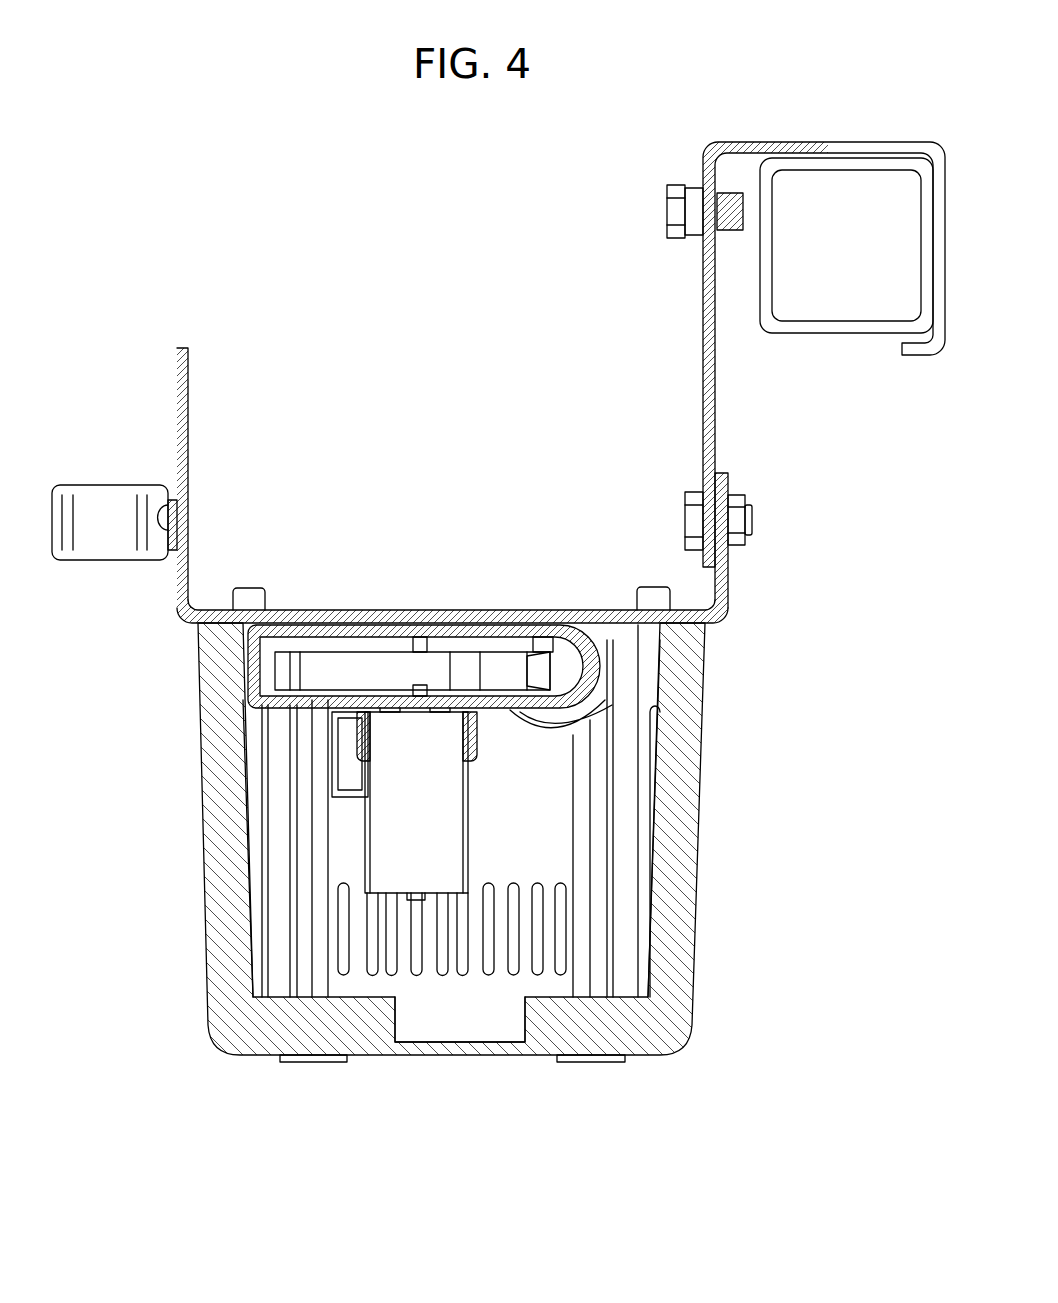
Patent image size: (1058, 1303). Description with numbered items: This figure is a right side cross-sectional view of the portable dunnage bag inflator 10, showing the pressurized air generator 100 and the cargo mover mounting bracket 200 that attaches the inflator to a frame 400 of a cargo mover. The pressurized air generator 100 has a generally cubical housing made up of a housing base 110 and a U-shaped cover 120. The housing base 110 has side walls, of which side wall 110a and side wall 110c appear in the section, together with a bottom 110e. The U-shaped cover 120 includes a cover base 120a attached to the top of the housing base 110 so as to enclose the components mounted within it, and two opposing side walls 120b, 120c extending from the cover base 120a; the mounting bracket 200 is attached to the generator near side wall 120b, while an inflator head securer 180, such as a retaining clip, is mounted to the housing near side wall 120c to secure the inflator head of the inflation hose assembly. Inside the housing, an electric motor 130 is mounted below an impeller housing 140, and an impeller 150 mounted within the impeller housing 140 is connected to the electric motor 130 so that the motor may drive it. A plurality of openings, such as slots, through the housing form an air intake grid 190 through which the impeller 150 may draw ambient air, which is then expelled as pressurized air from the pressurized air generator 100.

The portable dunnage bag inflator 10 is at (259, 232).
The pressurized air generator 100 is at (461, 895).
The housing base 110 is at (461, 879).
The side wall 110a is at (215, 797).
The side wall 110c is at (702, 801).
The bottom 110e is at (389, 1058).
The U-shaped cover 120 is at (502, 477).
The cover base 120a is at (342, 610).
The side wall 120b is at (728, 575).
The side wall 120c is at (190, 458).
The electric motor 130 is at (437, 806).
The impeller housing 140 is at (250, 683).
The impeller 150 is at (560, 663).
The inflator head securer 180 is at (88, 560).
The air intake grid 190 is at (512, 985).
The cargo mover mounting bracket 200 is at (780, 136).
The frame 400 is at (843, 334).